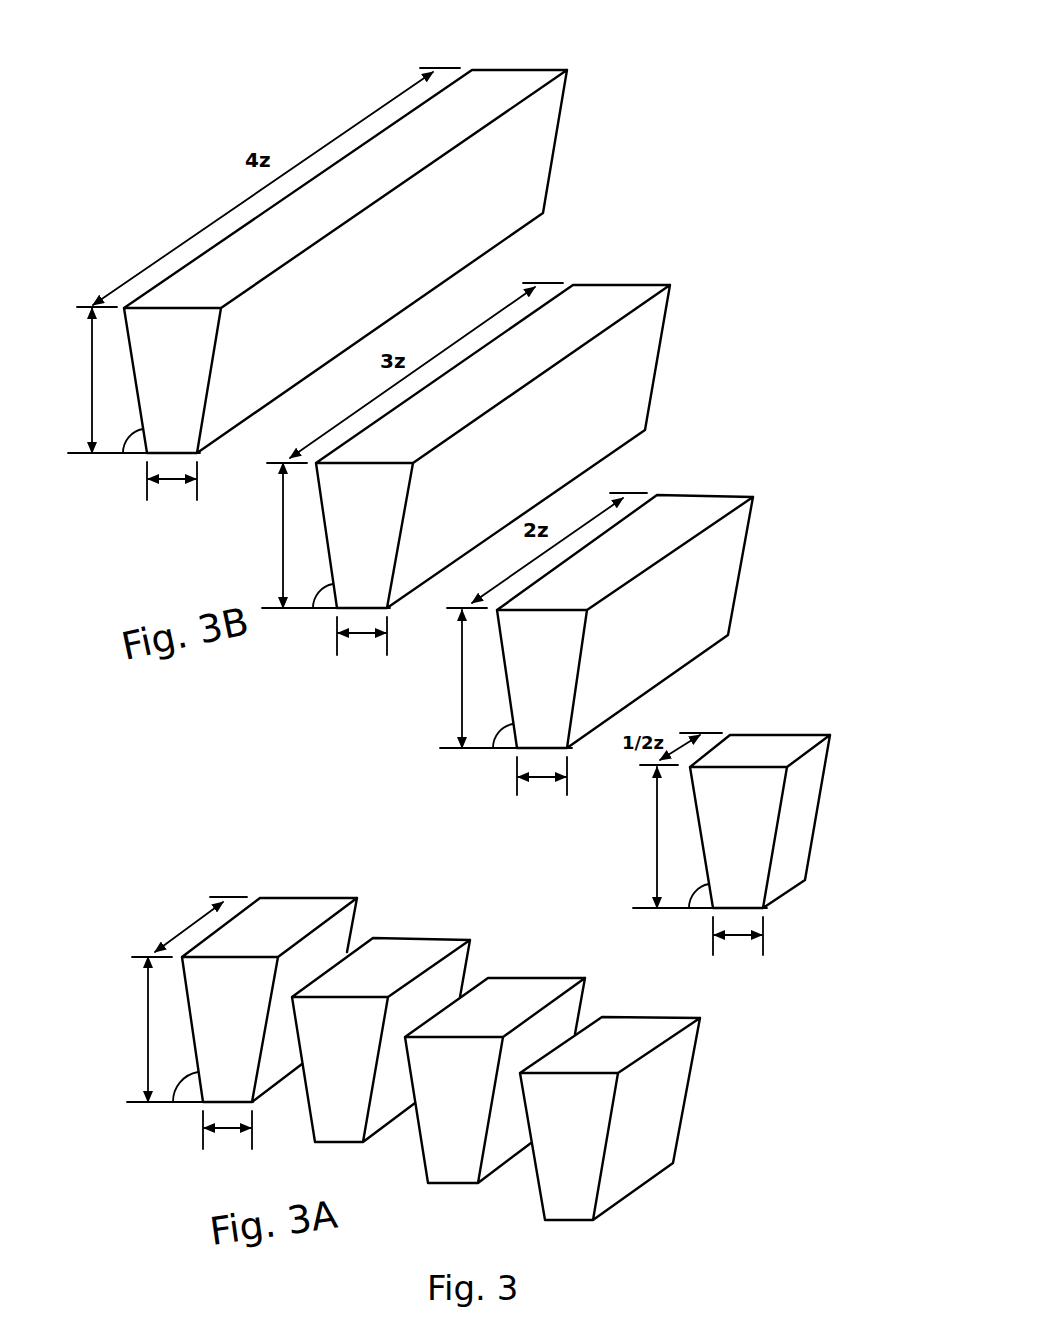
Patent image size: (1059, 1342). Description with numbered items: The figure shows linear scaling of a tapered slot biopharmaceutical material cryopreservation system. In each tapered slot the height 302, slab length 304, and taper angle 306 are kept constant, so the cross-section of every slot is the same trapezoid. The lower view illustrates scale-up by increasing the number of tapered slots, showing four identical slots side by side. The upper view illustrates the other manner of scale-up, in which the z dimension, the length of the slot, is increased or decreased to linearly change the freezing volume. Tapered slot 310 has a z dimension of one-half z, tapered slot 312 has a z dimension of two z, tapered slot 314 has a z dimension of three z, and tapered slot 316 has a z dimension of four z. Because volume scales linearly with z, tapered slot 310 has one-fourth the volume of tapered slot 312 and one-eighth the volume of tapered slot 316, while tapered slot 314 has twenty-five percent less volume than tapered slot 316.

In FIG. 3B, the height 302 is at (357, 607).
In FIG. 3A, the height 302 is at (128, 1029).
In FIG. 3B, the slab length 304 is at (455, 732).
In FIG. 3A, the slab length 304 is at (227, 1156).
In FIG. 3B, the taper angle 306 is at (408, 660).
In FIG. 3A, the taper angle 306 is at (176, 1078).
In FIG. 3B, the tapered slot 310 is at (745, 722).
In FIG. 3B, the tapered slot 312 is at (675, 484).
In FIG. 3B, the tapered slot 314 is at (620, 276).
In FIG. 3B, the tapered slot 316 is at (510, 56).